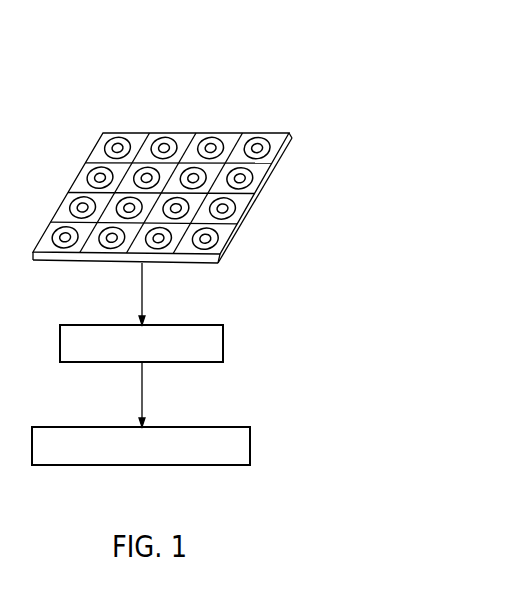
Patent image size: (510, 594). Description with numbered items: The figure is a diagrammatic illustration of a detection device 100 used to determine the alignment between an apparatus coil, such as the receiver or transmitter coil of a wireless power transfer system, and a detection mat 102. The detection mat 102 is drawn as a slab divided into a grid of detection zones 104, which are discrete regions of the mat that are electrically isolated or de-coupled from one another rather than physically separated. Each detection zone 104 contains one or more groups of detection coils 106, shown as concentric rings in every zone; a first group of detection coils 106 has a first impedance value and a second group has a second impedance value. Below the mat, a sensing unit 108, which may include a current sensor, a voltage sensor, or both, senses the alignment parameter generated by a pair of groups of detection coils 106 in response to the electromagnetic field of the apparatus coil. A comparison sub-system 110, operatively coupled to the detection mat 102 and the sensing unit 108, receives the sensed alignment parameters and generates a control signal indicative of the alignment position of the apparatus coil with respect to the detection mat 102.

The detection device 100 is at (335, 55).
The detection mat 102 is at (116, 132).
The detection zones 104 is at (253, 131).
The detection coils 106 is at (279, 163).
The sensing unit 108 is at (223, 340).
The comparison sub-system 110 is at (250, 442).